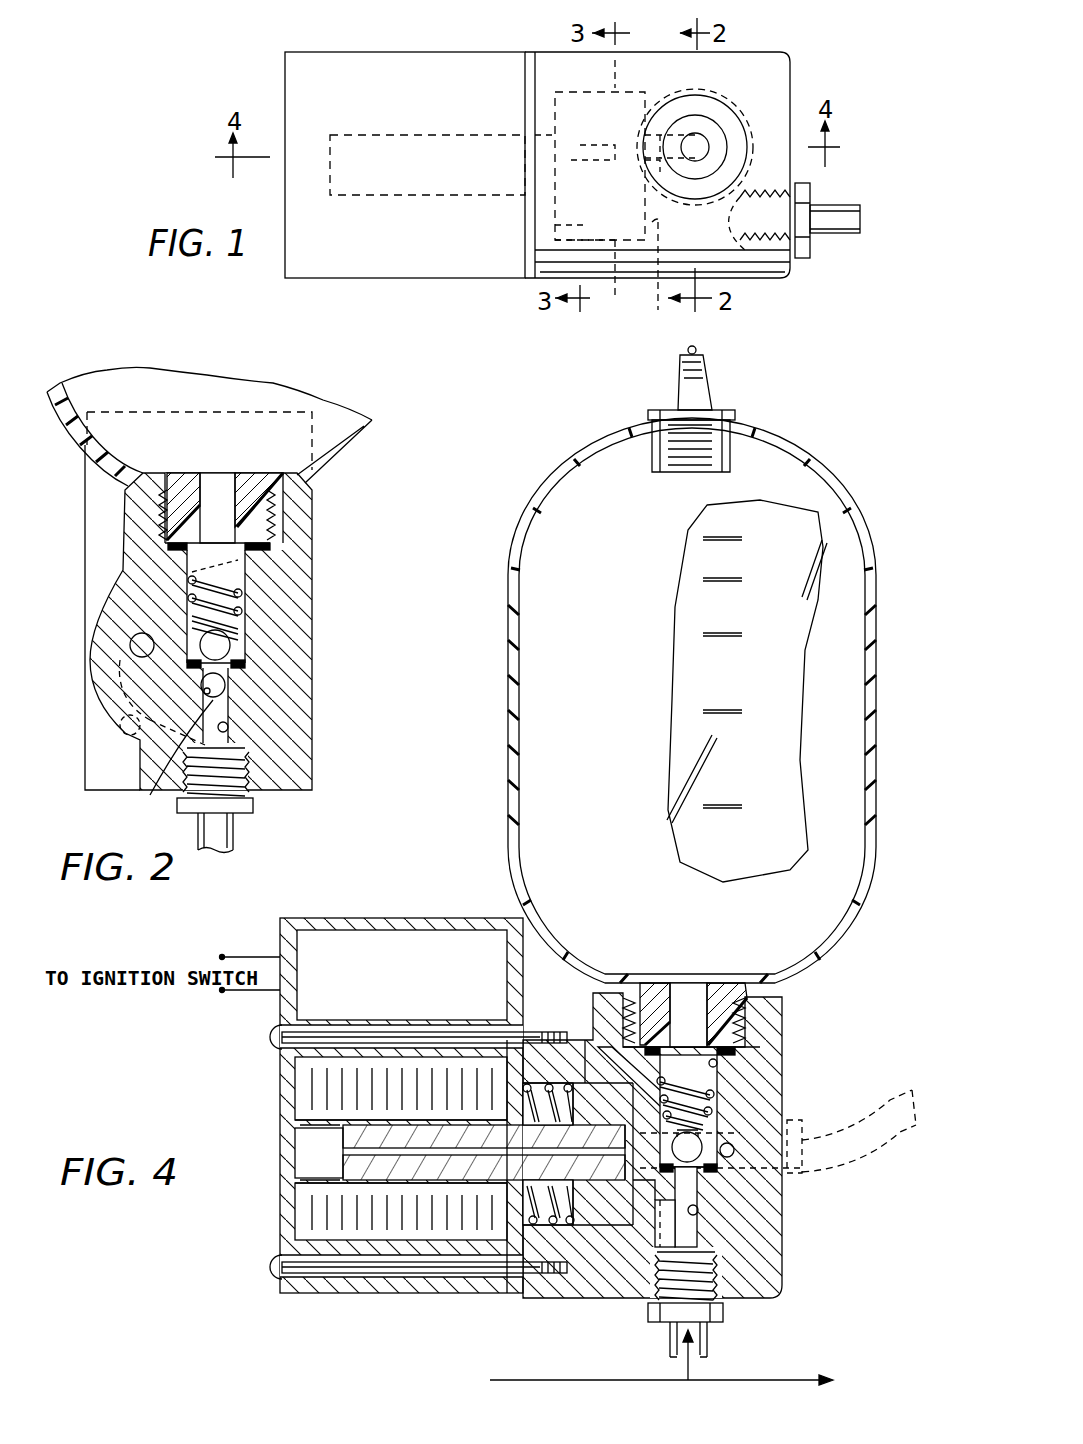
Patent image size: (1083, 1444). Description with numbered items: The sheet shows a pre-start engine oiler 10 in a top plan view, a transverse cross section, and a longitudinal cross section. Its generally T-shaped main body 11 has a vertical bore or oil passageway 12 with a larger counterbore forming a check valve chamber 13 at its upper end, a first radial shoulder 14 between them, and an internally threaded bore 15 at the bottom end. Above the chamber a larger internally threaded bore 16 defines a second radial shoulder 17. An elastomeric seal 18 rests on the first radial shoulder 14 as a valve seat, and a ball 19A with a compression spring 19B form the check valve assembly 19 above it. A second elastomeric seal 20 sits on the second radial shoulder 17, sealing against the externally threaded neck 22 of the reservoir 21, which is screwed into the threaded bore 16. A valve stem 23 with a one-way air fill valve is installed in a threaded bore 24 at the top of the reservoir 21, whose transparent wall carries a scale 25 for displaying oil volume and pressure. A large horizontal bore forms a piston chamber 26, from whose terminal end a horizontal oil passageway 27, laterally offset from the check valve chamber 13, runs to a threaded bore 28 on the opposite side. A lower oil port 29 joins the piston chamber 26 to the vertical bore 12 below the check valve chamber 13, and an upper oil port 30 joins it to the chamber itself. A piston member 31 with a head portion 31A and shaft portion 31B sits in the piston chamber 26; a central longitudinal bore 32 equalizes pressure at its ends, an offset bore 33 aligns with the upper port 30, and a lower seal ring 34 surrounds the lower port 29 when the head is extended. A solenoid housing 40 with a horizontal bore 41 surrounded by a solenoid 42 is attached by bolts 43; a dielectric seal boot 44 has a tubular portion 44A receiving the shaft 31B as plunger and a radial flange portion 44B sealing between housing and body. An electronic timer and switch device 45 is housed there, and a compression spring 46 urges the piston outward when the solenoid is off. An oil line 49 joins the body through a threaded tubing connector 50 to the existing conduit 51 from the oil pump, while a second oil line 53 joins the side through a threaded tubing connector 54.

In FIG. 1, the pre-start engine oiler 10 is at (860, 121).
In FIG. 2, the pre-start engine oiler 10 is at (371, 484).
In FIG. 4, the pre-start engine oiler 10 is at (488, 889).
In FIG. 1, the main body 11 is at (746, 64).
In FIG. 4, the main body 11 is at (783, 1262).
In FIG. 2, the vertical bore or oil passageway 12 is at (228, 727).
In FIG. 4, the vertical bore or oil passageway 12 is at (699, 1226).
In FIG. 1, the check valve chamber 13 is at (720, 155).
In FIG. 2, the check valve chamber 13 is at (248, 570).
In FIG. 4, the check valve chamber 13 is at (722, 1078).
In FIG. 1, the first radial shoulder 14 is at (705, 130).
In FIG. 2, the first radial shoulder 14 is at (232, 680).
In FIG. 4, the first radial shoulder 14 is at (699, 1205).
In FIG. 2, the internally threaded bore 15 is at (248, 778).
In FIG. 4, the internally threaded bore 15 is at (720, 1282).
In FIG. 2, the internally threaded bore 16 is at (280, 512).
In FIG. 4, the internally threaded bore 16 is at (760, 1012).
In FIG. 2, the second radial shoulder 17 is at (255, 556).
In FIG. 4, the second radial shoulder 17 is at (735, 1060).
In FIG. 2, the elastomeric seal 18 is at (247, 668).
In FIG. 4, the elastomeric seal 18 is at (720, 1172).
In FIG. 2, the check valve assembly 19 is at (240, 620).
In FIG. 4, the check valve assembly 19 is at (715, 1108).
In FIG. 2, the ball 19A is at (230, 648).
In FIG. 4, the ball 19A is at (700, 1140).
In FIG. 2, the compression spring 19B is at (190, 615).
In FIG. 4, the compression spring 19B is at (720, 1095).
In FIG. 2, the second elastomeric seal 20 is at (268, 547).
In FIG. 4, the second elastomeric seal 20 is at (740, 1052).
In FIG. 2, the reservoir 21 is at (98, 382).
In FIG. 4, the reservoir 21 is at (582, 446).
In FIG. 2, the externally threaded neck 22 is at (190, 495).
In FIG. 4, the externally threaded neck 22 is at (722, 968).
In FIG. 4, the valve stem 23 is at (712, 390).
In FIG. 4, the threaded bore 24 is at (735, 426).
In FIG. 4, the scale 25 is at (705, 640).
In FIG. 1, the piston chamber 26 is at (621, 197).
In FIG. 2, the piston chamber 26 is at (100, 720).
In FIG. 4, the piston chamber 26 is at (560, 1228).
In FIG. 1, the horizontal bore or oil passageway 27 is at (657, 279).
In FIG. 2, the horizontal bore or oil passageway 27 is at (170, 630).
In FIG. 4, the horizontal bore or oil passageway 27 is at (735, 1152).
In FIG. 1, the threaded bore 28 is at (765, 278).
In FIG. 1, the lower horizontal bore or oil port 29 is at (645, 163).
In FIG. 2, the lower horizontal bore or oil port 29 is at (166, 761).
In FIG. 4, the lower horizontal bore or oil port 29 is at (655, 1248).
In FIG. 1, the upper horizontal bore or oil port 30 is at (652, 166).
In FIG. 2, the upper horizontal bore or oil port 30 is at (150, 636).
In FIG. 4, the upper horizontal bore or oil port 30 is at (642, 1088).
In FIG. 1, the piston member 31 is at (547, 130).
In FIG. 4, the piston member 31 is at (435, 1184).
In FIG. 1, the piston head portion 31A is at (535, 228).
In FIG. 4, the piston head portion 31A is at (606, 1228).
In FIG. 1, the piston shaft portion 31B is at (385, 135).
In FIG. 4, the piston shaft portion 31B is at (300, 1132).
In FIG. 4, the central longitudinal bore 32 is at (345, 1150).
In FIG. 4, the bore 33 is at (583, 1033).
In FIG. 4, the lower seal ring 34 is at (628, 1230).
In FIG. 1, the solenoid housing 40 is at (356, 266).
In FIG. 2, the solenoid housing 40 is at (95, 491).
In FIG. 4, the solenoid housing 40 is at (402, 918).
In FIG. 4, the horizontal bore 41 is at (300, 1118).
In FIG. 4, the solenoid 42 is at (312, 1082).
In FIG. 4, the bolts 43 is at (276, 1033).
In FIG. 4, the seal boot 44 is at (300, 1216).
In FIG. 4, the closed end tubular portion 44A is at (330, 1189).
In FIG. 4, the radial flange portion 44B is at (515, 1290).
In FIG. 4, the electronic timer and switch device 45 is at (352, 900).
In FIG. 4, the compression spring 46 is at (540, 1185).
In FIG. 2, the oil line 49 is at (236, 836).
In FIG. 4, the oil line 49 is at (708, 1340).
In FIG. 2, the threaded tubing connector 50 is at (252, 814).
In FIG. 4, the threaded tubing connector 50 is at (726, 1315).
In FIG. 4, the existing conduit 51 is at (532, 1379).
In FIG. 1, the second oil line 53 is at (851, 236).
In FIG. 1, the threaded tubing connector 54 is at (803, 255).